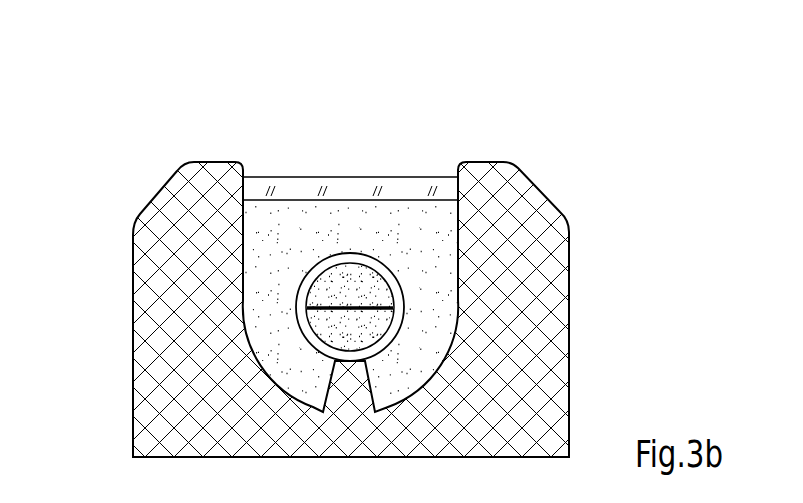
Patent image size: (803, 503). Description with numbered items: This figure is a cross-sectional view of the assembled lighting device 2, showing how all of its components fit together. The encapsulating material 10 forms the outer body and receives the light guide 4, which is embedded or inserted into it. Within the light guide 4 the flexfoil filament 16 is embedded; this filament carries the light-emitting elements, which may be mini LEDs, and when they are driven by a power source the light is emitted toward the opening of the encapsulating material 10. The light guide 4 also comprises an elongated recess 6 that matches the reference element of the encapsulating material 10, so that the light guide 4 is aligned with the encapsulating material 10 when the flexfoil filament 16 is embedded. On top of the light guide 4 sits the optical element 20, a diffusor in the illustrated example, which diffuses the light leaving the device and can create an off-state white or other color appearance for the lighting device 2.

The lighting device 2 is at (142, 138).
The light guide 4 is at (270, 317).
The recess 6 is at (247, 233).
The encapsulating material 10 is at (538, 282).
The flexfoil filament 16 is at (372, 290).
The optical element 20 is at (300, 188).